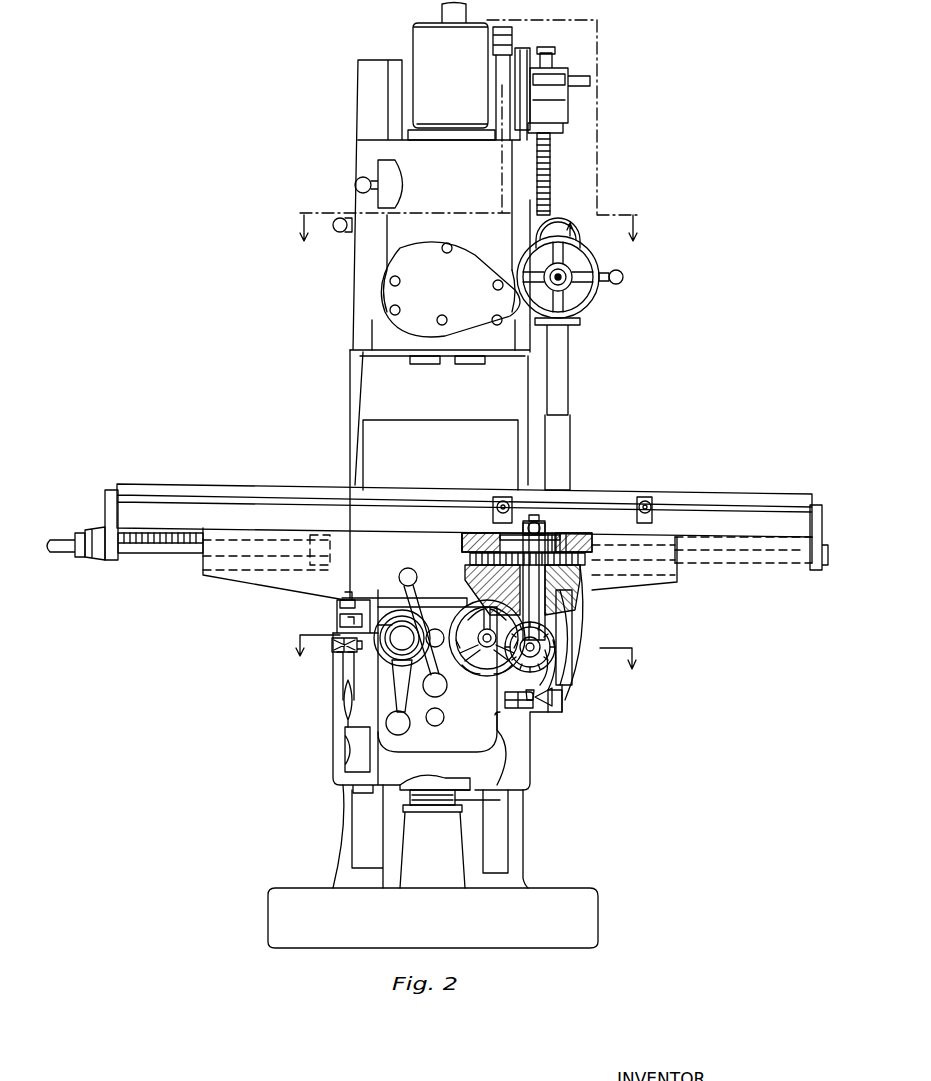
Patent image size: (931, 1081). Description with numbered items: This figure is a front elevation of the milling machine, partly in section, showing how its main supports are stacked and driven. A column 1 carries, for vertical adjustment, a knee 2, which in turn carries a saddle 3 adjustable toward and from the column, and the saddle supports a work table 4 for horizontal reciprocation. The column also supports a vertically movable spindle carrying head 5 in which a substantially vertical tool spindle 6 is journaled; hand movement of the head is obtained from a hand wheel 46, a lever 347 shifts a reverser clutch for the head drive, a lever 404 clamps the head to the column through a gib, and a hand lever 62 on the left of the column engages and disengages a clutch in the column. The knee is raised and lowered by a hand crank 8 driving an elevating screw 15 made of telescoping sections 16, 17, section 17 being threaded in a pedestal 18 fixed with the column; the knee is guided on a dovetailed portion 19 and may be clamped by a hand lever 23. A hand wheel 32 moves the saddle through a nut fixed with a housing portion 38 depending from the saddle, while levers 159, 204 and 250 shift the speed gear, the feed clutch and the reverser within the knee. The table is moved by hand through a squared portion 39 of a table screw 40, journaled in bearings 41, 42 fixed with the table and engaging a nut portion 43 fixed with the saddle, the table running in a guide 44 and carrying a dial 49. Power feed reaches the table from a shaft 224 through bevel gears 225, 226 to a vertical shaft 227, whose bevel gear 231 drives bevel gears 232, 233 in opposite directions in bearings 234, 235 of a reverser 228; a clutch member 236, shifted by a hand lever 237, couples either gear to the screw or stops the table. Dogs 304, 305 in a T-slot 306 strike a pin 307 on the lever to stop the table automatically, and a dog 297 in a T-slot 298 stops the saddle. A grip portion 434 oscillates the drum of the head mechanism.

The column 1 is at (350, 438).
The knee 2 is at (382, 718).
The saddle 3 is at (252, 588).
The work table 4 is at (205, 487).
The spindle carrying head 5 is at (395, 250).
The tool spindle 6 is at (425, 364).
The hand crank 8 is at (402, 706).
The elevating screw 15 is at (400, 800).
The telescoping section 16 is at (400, 780).
The telescoping section 17 is at (510, 794).
The pedestal 18 is at (450, 826).
The dovetailed portion 19 is at (464, 219).
The hand lever 23 is at (342, 700).
The hand wheel 32 is at (520, 690).
The housing portion 38 is at (550, 680).
The squared portion 39 is at (62, 538).
The table screw 40 is at (150, 556).
The bearing 41 is at (110, 490).
The bearing 42 is at (815, 505).
The nut portion 43 is at (322, 570).
The guide 44 is at (543, 174).
The hand wheel 46 is at (592, 300).
The dial 49 is at (95, 560).
The hand lever 62 is at (338, 231).
The hand lever 159 is at (350, 652).
The hand lever 204 is at (452, 668).
The shaft 224 is at (558, 675).
The bevel gear 225 is at (552, 665).
The bevel gear 226 is at (585, 620).
The vertical shaft 227 is at (580, 590).
The reverser 228 is at (556, 533).
The bevel gear 231 is at (524, 592).
The bevel gear 232 is at (524, 520).
The bevel gear 233 is at (560, 533).
The bearing 234 is at (510, 537).
The bearing 235 is at (566, 533).
The clutch member 236 is at (552, 533).
The hand lever 237 is at (548, 533).
The hand lever 250 is at (562, 705).
The dog 297 is at (340, 618).
The T-slot 298 is at (350, 592).
The dog 304 is at (493, 497).
The dog 305 is at (652, 505).
The T-slot 306 is at (418, 500).
The pin 307 is at (533, 515).
The hand lever 347 is at (624, 278).
The lever 404 is at (355, 186).
The grip portion 434 is at (590, 78).